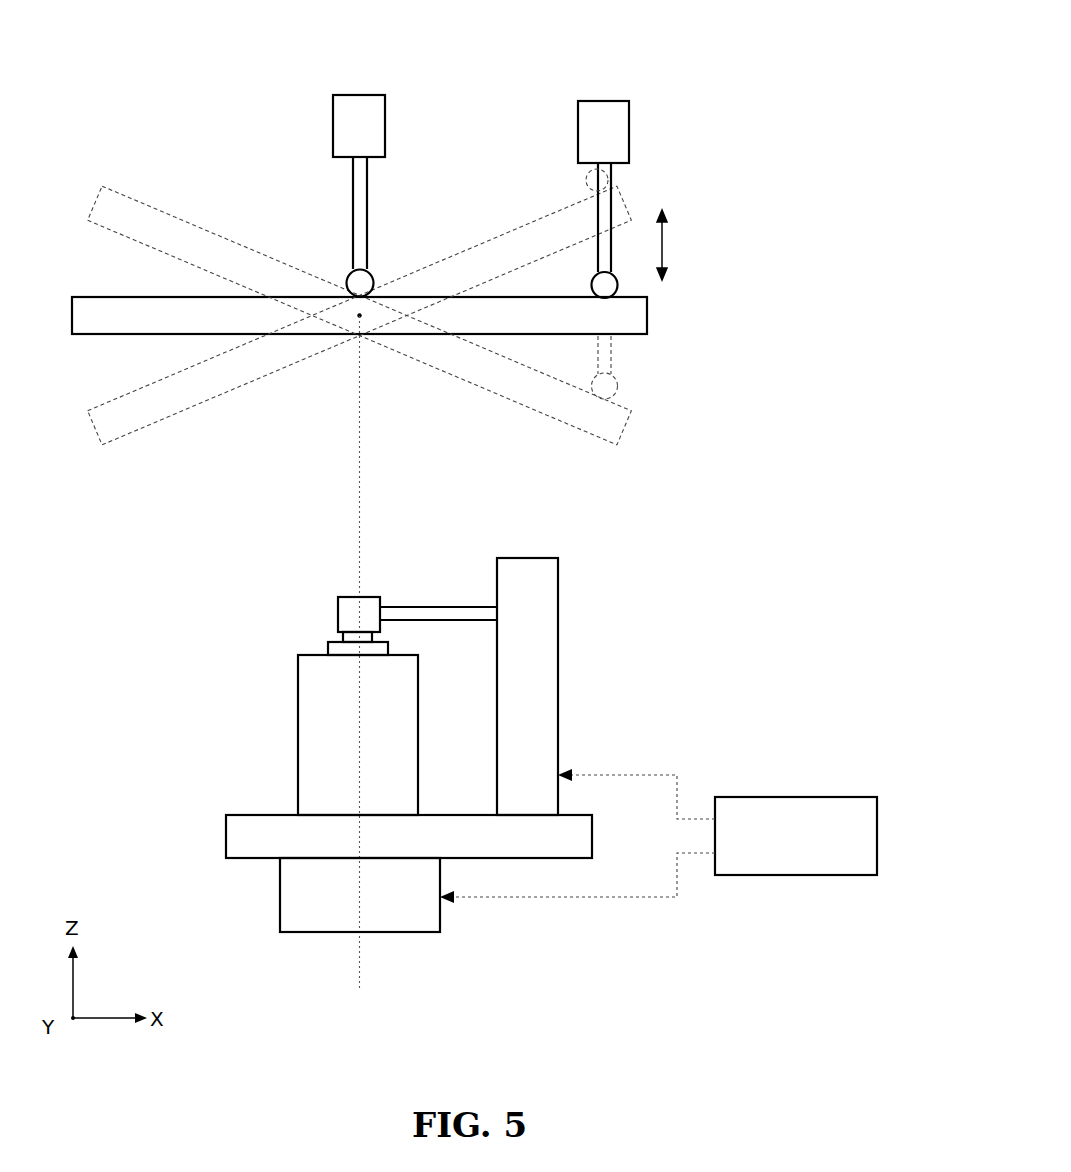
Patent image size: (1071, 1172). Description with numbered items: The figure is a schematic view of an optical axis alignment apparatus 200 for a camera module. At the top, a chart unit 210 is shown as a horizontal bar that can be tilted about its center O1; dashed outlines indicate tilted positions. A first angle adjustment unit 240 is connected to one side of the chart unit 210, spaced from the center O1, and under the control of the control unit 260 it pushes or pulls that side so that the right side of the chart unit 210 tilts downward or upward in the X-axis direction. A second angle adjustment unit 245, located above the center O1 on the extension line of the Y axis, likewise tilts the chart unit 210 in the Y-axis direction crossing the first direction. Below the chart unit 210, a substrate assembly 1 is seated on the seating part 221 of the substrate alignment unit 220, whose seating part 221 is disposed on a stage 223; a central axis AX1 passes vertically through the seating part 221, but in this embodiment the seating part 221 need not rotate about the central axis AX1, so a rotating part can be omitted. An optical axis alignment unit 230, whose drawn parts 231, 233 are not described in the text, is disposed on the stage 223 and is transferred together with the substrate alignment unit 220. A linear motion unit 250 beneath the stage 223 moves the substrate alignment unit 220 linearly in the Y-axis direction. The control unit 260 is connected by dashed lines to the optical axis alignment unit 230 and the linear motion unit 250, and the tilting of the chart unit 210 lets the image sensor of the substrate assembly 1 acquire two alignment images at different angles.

The optical axis alignment apparatus 200 is at (758, 40).
The chart unit 210 is at (647, 315).
The first angle adjustment unit 240 is at (629, 133).
The second angle adjustment unit 245 is at (385, 122).
The center of the chart unit O1 is at (366, 313).
The optical axis alignment unit 230 is at (538, 501).
The support column 231 is at (525, 560).
The holder block 233 is at (378, 598).
The substrate assembly 1 is at (300, 638).
The substrate alignment unit 220 is at (133, 755).
The seating part 221 is at (308, 756).
The stage 223 is at (226, 838).
The linear motion unit 250 is at (280, 900).
The control unit 260 is at (793, 797).
The central axis AX1 is at (360, 955).